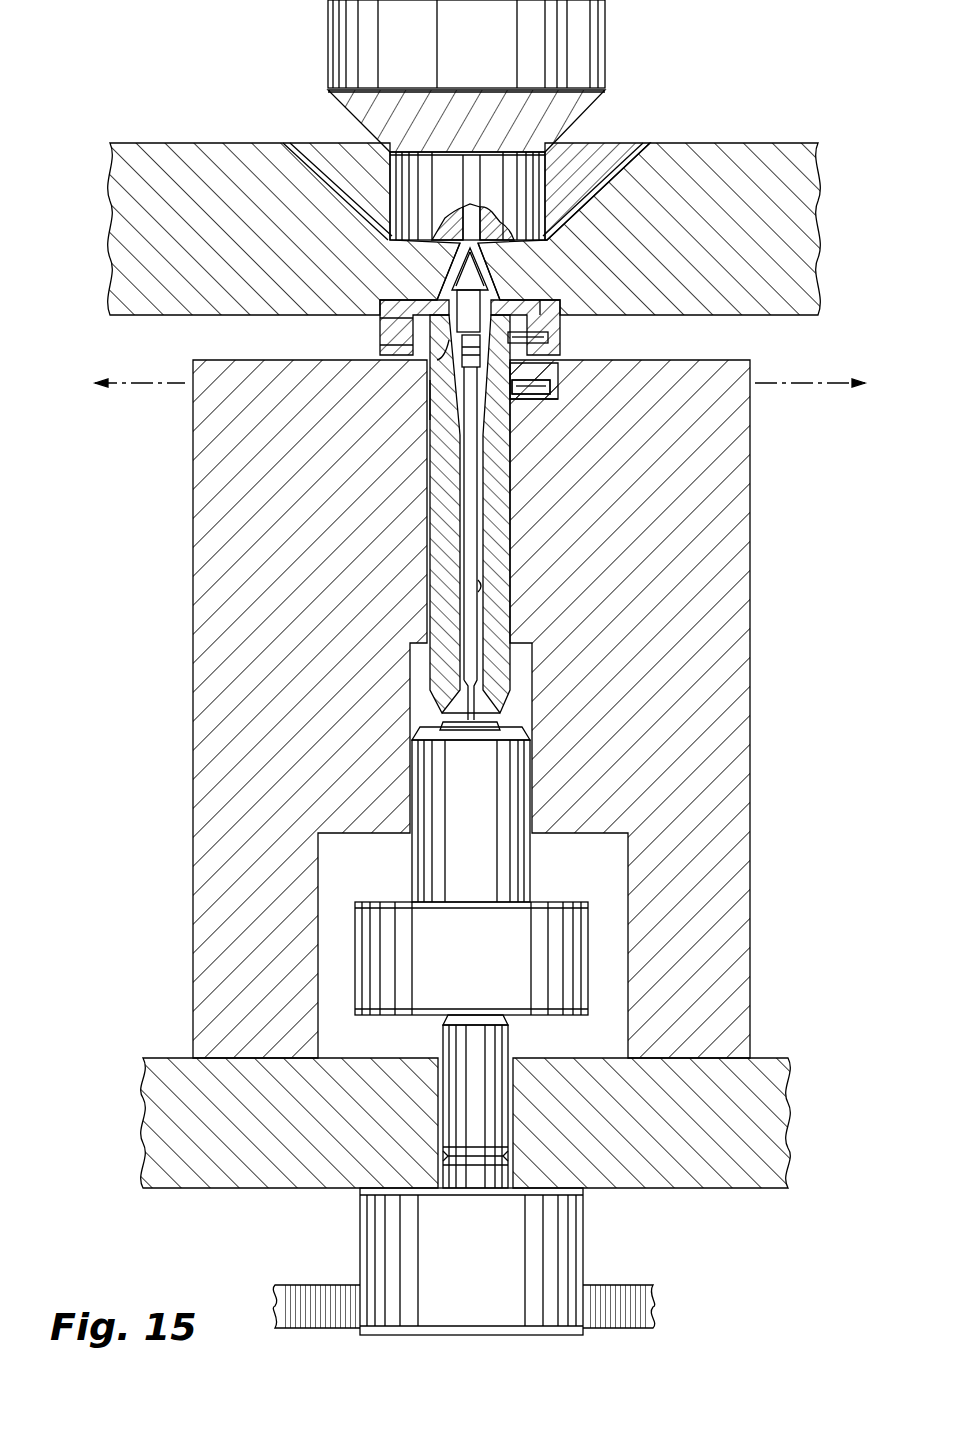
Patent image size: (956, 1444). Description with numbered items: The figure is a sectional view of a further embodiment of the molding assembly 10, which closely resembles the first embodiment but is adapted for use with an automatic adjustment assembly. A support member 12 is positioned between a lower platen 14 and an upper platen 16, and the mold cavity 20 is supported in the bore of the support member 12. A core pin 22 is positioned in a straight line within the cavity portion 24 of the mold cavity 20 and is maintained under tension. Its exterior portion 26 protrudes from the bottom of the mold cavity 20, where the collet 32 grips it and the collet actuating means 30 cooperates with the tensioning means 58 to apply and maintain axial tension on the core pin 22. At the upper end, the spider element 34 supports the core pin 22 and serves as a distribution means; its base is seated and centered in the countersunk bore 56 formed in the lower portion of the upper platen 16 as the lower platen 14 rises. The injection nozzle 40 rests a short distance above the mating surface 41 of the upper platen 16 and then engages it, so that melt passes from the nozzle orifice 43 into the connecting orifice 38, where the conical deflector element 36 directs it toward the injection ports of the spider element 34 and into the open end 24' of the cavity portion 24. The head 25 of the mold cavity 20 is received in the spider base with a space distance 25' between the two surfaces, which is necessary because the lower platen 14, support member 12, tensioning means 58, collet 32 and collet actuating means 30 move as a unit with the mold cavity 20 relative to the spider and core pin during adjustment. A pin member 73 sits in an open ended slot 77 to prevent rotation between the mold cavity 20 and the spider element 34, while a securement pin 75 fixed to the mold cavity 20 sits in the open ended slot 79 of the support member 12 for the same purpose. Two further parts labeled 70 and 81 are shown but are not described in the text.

The molding assembly 10 is at (797, 545).
The support member 12 is at (752, 800).
The lower platen 14 is at (755, 1190).
The upper platen 16 is at (790, 318).
The mold cavity 20 is at (500, 540).
The core pin 22 is at (473, 572).
The cavity portion 24 is at (523, 601).
The open end 24' is at (402, 374).
The head 25 is at (406, 405).
The space distance 25' is at (375, 353).
The exterior portion 26 is at (500, 728).
The collet actuating means 30 is at (555, 878).
The collet 32 is at (515, 737).
The spider element 34 is at (560, 318).
The deflector element 36 is at (488, 270).
The orifice 38 is at (452, 265).
The injection nozzle 40 is at (592, 120).
The mating surface 41 is at (618, 165).
The nozzle orifice 43 is at (465, 208).
The countersunk bore 56 is at (568, 300).
The tensioning means 58 is at (350, 1193).
The base plate 70 is at (632, 1288).
The pin member 73 is at (552, 340).
The securement pin 75 is at (556, 392).
The open ended slot 77 is at (560, 372).
The open ended slot 79 is at (545, 405).
The surface 81 is at (385, 322).